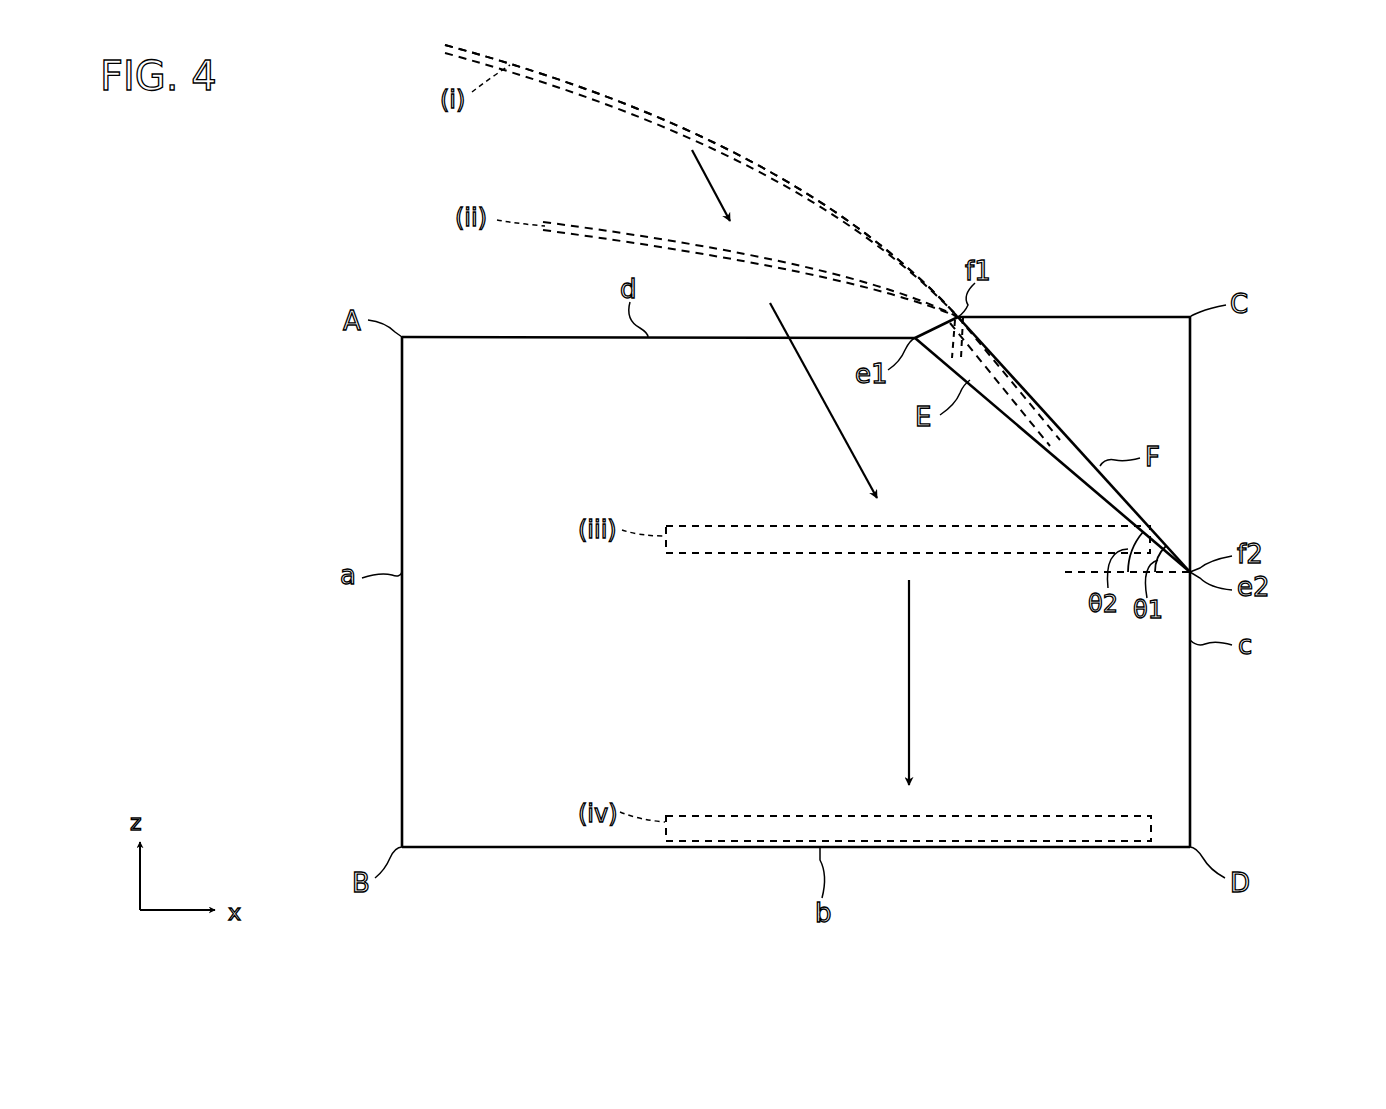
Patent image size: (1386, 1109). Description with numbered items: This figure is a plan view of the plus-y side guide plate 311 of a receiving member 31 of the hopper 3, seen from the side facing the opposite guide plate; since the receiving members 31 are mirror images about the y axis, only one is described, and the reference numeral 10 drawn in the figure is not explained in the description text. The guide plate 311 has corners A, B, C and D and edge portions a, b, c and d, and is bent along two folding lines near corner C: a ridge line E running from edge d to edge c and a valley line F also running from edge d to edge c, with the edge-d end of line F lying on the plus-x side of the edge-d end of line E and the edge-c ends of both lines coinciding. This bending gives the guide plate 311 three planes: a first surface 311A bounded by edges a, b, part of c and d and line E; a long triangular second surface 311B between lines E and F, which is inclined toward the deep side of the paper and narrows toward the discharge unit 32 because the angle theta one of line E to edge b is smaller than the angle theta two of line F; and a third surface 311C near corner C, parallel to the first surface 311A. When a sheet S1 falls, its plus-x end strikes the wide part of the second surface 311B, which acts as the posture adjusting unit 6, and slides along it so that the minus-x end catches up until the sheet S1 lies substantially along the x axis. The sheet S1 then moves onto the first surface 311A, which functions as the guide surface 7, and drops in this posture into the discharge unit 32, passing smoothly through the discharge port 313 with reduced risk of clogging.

The liquid crystal display device 10 is at (1326, 188).
The hopper 3 is at (1303, 391).
The receiving member 31 is at (781, 590).
The guide plate 311 is at (781, 590).
The first surface 311A is at (348, 592).
The guide surface 7 is at (422, 461).
The second surface 311B is at (1051, 455).
The posture adjusting unit 6 is at (995, 392).
The third surface 311C is at (1130, 333).
The discharge port 313 is at (555, 840).
The discharge unit 32 is at (1068, 863).
The sheet S1 is at (900, 235).